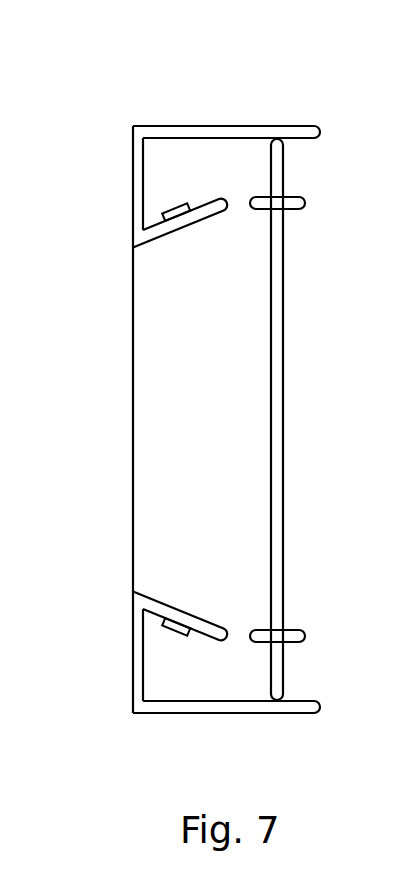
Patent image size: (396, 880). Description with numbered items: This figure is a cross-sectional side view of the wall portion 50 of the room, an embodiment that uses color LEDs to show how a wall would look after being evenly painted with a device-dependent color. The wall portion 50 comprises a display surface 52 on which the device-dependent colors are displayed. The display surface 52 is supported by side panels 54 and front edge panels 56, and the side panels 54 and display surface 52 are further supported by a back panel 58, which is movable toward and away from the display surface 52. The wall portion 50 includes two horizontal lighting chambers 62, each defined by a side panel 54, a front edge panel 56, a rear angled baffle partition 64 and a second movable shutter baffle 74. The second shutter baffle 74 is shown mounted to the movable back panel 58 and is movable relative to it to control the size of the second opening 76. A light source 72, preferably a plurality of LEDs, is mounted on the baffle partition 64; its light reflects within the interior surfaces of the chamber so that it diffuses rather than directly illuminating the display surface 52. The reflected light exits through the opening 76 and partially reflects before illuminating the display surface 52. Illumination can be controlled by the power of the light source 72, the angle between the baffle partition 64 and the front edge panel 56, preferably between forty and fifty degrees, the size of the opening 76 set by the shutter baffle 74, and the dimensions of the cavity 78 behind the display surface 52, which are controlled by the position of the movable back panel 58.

The wall portion 50 is at (325, 91).
The display surface 52 is at (133, 404).
The side panel 54 is at (250, 132).
The front edge panel 56 is at (137, 151).
The back panel 58 is at (277, 404).
The horizontal lighting chamber 62 is at (162, 158).
The rear angled baffle partition 64 is at (157, 238).
The light source 72 is at (177, 207).
The second movable shutter baffle 74 is at (291, 203).
The second opening 76 is at (235, 205).
The cavity 78 is at (188, 406).